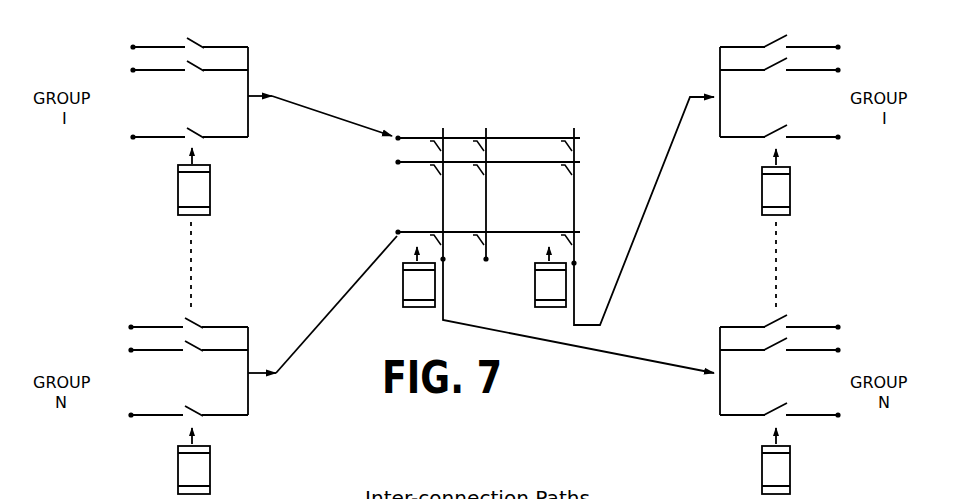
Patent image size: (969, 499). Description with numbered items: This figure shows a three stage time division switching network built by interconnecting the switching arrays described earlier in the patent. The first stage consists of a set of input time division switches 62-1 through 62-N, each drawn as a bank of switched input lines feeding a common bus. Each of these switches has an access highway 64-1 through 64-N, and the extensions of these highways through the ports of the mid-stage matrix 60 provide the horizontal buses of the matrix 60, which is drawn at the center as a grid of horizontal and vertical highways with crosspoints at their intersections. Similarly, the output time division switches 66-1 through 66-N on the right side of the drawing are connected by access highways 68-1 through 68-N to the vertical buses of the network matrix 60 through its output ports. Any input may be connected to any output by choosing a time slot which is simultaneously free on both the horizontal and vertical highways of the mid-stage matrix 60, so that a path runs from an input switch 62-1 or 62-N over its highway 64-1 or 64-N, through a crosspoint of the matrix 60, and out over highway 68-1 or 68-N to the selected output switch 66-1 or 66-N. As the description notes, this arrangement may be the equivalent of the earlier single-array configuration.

The first stage time division switch 62-1 is at (199, 34).
The first stage time division switch 62-N is at (201, 310).
The access highway 64-1 is at (347, 120).
The access highway 64-N is at (355, 282).
The mid-stage matrix 60 is at (509, 131).
The output time division switch 66-1 is at (798, 34).
The output time division switch 66-N is at (798, 313).
The access highway 68-1 is at (655, 183).
The access highway 68-N is at (651, 358).